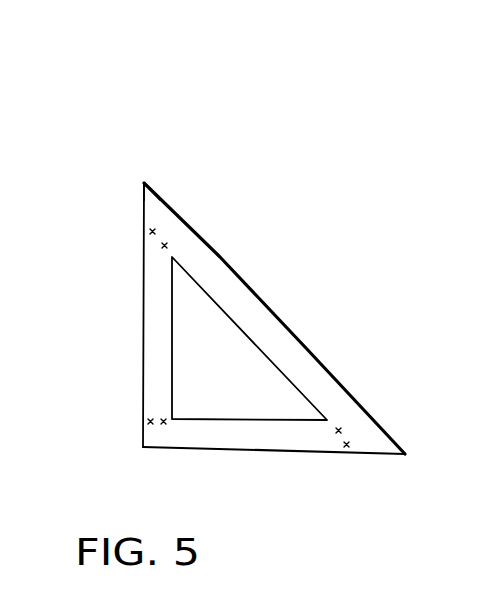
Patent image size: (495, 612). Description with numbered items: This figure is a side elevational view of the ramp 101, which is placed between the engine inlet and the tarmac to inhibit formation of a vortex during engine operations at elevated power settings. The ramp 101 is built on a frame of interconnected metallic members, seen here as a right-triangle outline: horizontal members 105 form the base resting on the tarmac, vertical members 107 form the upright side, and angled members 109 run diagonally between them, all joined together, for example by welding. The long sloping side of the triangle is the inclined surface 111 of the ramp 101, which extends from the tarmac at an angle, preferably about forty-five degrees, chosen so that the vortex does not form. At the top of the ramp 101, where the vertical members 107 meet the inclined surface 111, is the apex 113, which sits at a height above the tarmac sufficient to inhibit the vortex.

The ramp 101 is at (403, 107).
The horizontal members 105 is at (298, 445).
The vertical members 107 is at (153, 338).
The angled members 109 is at (280, 343).
The inclined surface 111 is at (223, 260).
The apex 113 is at (145, 183).